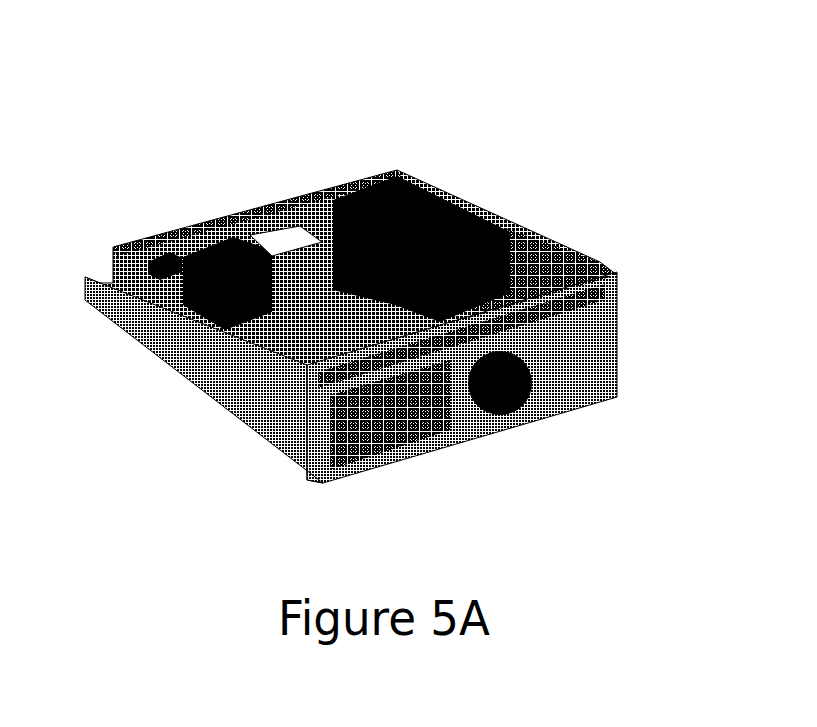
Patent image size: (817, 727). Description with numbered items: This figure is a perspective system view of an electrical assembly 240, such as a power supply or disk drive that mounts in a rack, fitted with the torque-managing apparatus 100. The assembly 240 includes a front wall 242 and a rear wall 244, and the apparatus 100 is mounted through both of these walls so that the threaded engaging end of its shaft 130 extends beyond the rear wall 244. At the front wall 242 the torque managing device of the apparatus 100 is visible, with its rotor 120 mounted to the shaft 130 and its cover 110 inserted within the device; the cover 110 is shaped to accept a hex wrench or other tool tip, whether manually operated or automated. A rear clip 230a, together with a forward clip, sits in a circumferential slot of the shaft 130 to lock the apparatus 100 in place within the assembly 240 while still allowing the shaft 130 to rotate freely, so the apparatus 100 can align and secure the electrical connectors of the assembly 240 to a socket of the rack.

The apparatus 100 is at (608, 218).
The cover 110 is at (518, 380).
The rotor 120 is at (482, 368).
The shaft 130 is at (293, 247).
The rear clip 230a is at (250, 207).
The assembly 240 is at (463, 238).
The front wall 242 is at (588, 323).
The rear wall 244 is at (163, 260).